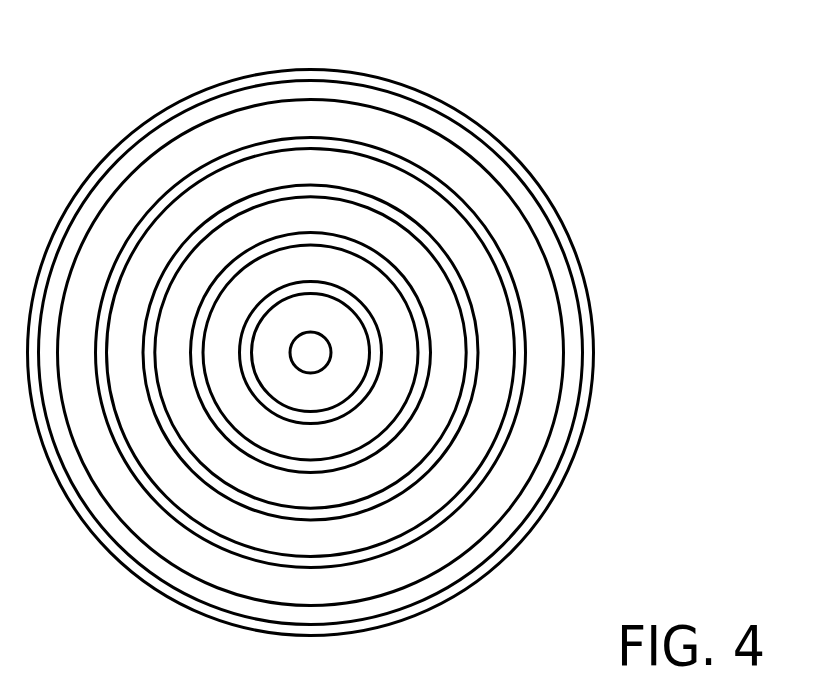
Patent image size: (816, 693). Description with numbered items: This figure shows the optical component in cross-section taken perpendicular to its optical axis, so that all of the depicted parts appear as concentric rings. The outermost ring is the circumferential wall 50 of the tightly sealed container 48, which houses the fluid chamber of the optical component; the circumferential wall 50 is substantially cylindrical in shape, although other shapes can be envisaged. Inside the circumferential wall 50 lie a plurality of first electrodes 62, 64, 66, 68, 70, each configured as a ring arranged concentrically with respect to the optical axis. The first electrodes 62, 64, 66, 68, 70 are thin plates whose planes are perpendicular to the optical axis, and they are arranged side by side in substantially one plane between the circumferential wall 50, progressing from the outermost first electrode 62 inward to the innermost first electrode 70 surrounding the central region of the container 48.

The lens assembly 48 is at (522, 87).
The outer ring 50 is at (388, 87).
The first annular zone 62 is at (277, 112).
The second annular zone 64 is at (258, 168).
The third annular zone 66 is at (278, 210).
The fourth annular zone 68 is at (293, 255).
The central zone 70 is at (308, 302).